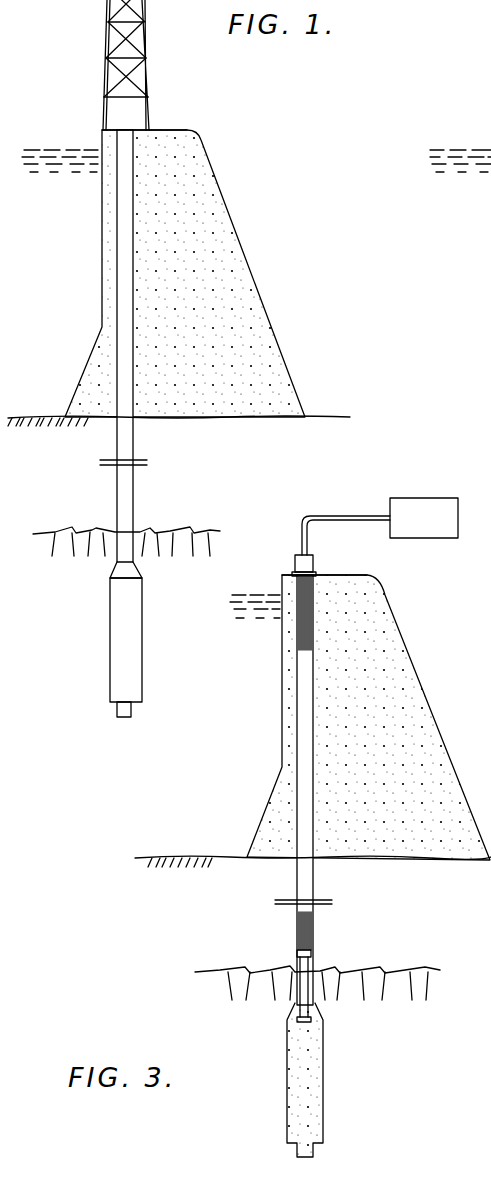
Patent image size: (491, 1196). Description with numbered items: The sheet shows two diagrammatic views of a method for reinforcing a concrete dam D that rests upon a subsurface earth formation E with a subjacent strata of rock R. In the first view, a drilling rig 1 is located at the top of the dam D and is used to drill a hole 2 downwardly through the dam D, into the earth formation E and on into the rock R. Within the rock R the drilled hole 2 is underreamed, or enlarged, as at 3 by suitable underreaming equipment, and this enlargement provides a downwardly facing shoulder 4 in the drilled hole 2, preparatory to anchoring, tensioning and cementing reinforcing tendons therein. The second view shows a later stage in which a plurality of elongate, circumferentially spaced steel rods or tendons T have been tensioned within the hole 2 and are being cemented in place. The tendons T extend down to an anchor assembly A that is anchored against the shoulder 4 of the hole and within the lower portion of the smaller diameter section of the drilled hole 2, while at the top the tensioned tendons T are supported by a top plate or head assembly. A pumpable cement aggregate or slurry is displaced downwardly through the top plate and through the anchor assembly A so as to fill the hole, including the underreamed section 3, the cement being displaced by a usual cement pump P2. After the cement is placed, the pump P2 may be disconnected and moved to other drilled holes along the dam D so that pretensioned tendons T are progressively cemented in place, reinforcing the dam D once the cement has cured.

In FIG. 1, the drilling rig 1 is at (153, 80).
In FIG. 1, the drilled hole 2 is at (116, 281).
In FIG. 1, the underreamed section 3 is at (112, 660).
In FIG. 1, the downwardly facing shoulder 4 is at (114, 572).
In FIG. 1, the dam D is at (237, 213).
In FIG. 3, the dam D is at (423, 682).
In FIG. 1, the earth formation E is at (32, 430).
In FIG. 3, the earth formation E is at (200, 870).
In FIG. 1, the rock R is at (160, 530).
In FIG. 3, the rock R is at (372, 968).
In FIG. 3, the cement pump P2 is at (375, 537).
In FIG. 3, the tendons T is at (309, 942).
In FIG. 3, the anchor assembly A is at (299, 998).